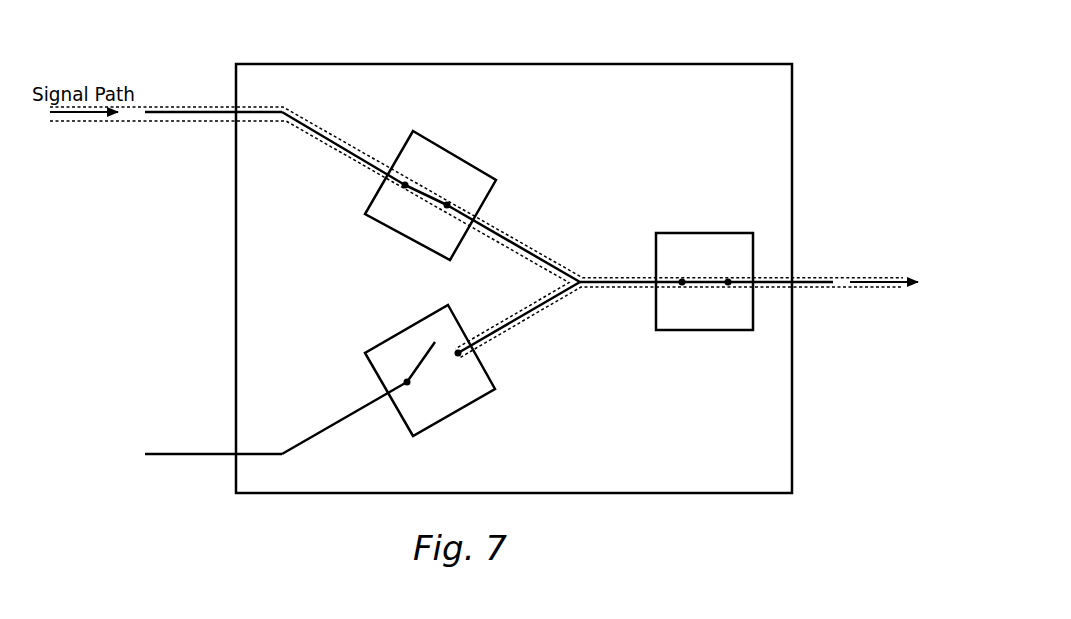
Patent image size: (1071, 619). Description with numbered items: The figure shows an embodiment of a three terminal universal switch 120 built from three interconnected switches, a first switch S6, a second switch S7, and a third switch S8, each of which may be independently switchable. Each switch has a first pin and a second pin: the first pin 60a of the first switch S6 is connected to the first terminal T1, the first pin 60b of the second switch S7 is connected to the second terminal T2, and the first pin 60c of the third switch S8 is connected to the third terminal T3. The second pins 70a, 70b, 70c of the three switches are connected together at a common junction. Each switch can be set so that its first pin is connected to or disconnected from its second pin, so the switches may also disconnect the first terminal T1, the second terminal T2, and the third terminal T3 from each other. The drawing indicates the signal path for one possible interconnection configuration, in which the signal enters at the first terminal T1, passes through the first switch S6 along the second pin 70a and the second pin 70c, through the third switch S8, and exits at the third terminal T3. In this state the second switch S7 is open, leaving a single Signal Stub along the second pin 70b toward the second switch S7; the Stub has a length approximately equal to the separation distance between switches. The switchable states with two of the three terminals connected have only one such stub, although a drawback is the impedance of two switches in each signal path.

The three terminal universal switch 120 is at (814, 50).
The first pin of the first switch 60a is at (355, 162).
The first pin of the second switch 60b is at (355, 410).
The first pin of the third switch 60c is at (767, 277).
The second pin of the first switch 70a is at (503, 230).
The second pin of the second switch 70b is at (518, 310).
The second pin of the third switch 70c is at (612, 277).
The first switch S6 is at (430, 195).
The second switch S7 is at (430, 370).
The third switch S8 is at (704, 281).
The first terminal T1 is at (213, 129).
The second terminal T2 is at (213, 469).
The third terminal T3 is at (893, 306).
The signal stub Stub is at (530, 317).